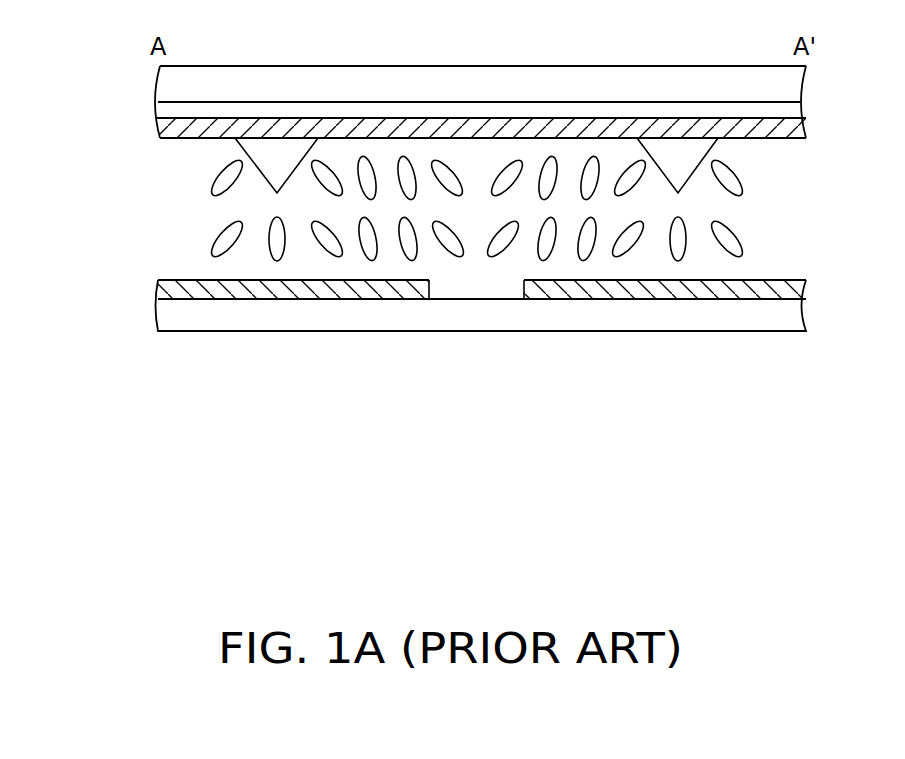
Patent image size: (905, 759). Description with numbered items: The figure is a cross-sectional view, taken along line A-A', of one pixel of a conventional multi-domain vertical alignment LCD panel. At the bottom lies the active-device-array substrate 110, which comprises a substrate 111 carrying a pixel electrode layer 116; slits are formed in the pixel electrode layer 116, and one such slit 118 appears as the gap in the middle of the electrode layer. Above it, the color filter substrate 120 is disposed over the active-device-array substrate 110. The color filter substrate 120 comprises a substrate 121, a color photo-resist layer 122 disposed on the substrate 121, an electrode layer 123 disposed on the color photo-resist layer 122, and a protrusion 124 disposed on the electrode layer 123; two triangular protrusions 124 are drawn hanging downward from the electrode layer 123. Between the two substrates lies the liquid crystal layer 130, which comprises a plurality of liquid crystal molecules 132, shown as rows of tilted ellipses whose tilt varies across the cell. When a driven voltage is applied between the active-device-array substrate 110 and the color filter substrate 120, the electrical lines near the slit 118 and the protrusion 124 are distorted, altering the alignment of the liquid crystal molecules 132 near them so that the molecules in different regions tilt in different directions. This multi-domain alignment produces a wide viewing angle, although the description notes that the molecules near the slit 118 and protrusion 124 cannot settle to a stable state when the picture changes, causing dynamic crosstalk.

The active-device-array substrate 110 is at (459, 336).
The substrate 111 is at (167, 318).
The pixel electrode layer 116 is at (157, 292).
The slit 118 is at (443, 288).
The color filter substrate 120 is at (482, 112).
The substrate 121 is at (167, 81).
The color photo-resist layer 122 is at (160, 108).
The electrode layer 123 is at (160, 130).
The protrusion 124 is at (250, 147).
The liquid crystal layer 130 is at (482, 207).
The liquid crystal molecule 132 is at (222, 236).